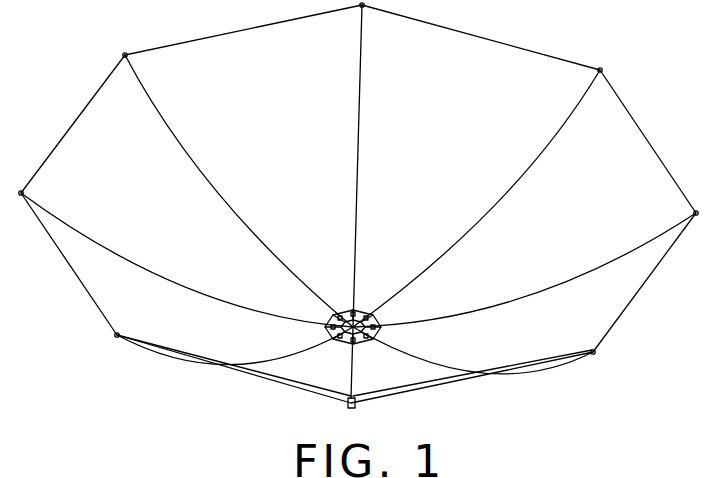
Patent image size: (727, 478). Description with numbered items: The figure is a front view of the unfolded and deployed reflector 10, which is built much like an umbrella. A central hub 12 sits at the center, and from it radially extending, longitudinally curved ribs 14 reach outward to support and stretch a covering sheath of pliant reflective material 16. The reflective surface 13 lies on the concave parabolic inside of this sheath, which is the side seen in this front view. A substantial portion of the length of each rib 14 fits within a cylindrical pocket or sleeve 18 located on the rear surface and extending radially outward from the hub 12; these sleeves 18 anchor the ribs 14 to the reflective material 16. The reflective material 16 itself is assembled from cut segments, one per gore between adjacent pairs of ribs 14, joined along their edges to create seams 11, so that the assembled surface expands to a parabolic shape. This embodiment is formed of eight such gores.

The reflector antenna 10 is at (639, 99).
The seams 11 is at (500, 198).
The central hub 12 is at (362, 313).
The reflective surface 13 is at (502, 62).
The ribs 14 is at (597, 351).
The reflective material 16 is at (201, 50).
The sleeves 18 is at (553, 369).